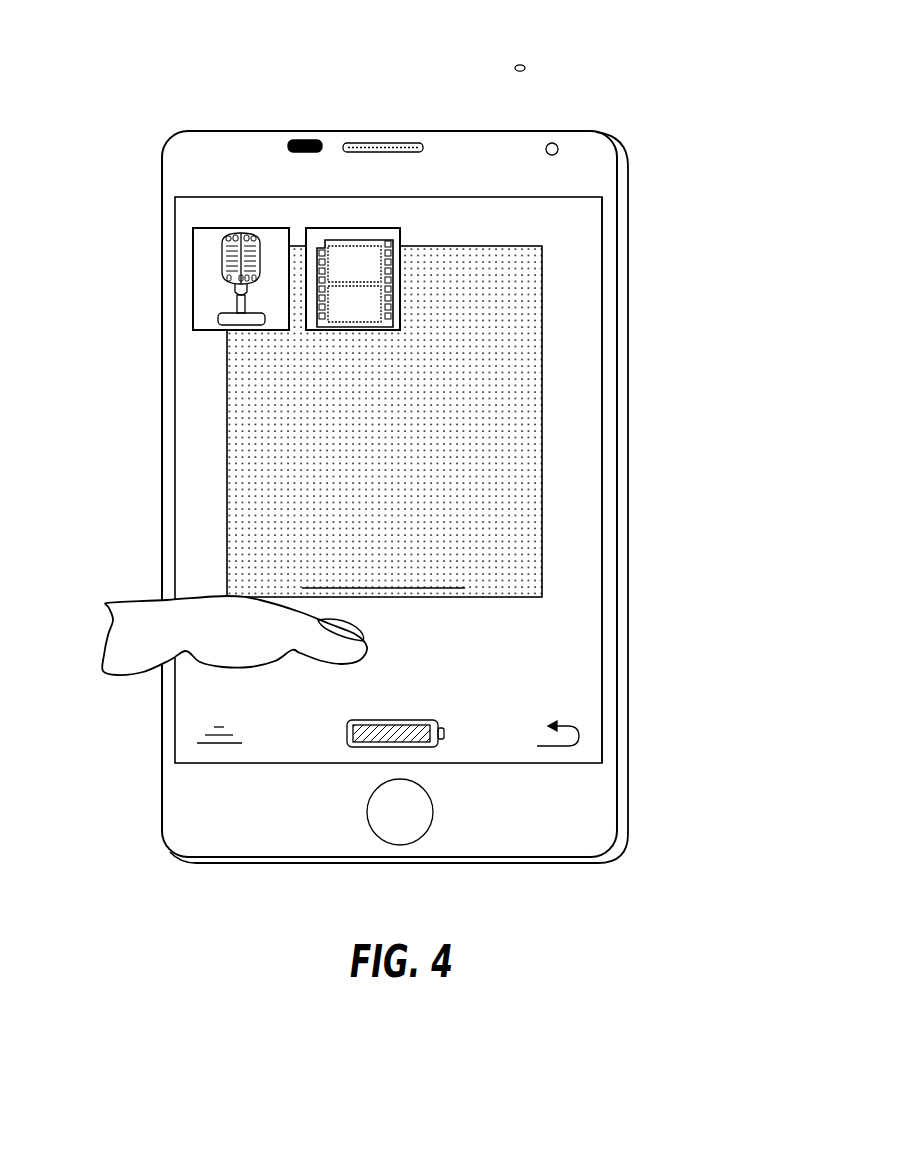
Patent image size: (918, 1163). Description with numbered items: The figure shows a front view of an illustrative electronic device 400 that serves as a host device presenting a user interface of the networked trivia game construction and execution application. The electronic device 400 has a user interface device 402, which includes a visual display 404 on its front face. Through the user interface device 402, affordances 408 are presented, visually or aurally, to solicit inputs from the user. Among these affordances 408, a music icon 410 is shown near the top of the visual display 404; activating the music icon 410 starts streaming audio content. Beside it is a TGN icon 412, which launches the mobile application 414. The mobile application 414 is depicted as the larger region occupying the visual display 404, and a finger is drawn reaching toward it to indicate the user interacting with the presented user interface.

The electronic device 400 is at (119, 163).
The user interface device 402 is at (204, 531).
The visual display 404 is at (606, 199).
The affordances 408 is at (159, 323).
The music icon 410 is at (238, 226).
The TGN icon 412 is at (401, 277).
The mobile application 414 is at (541, 418).